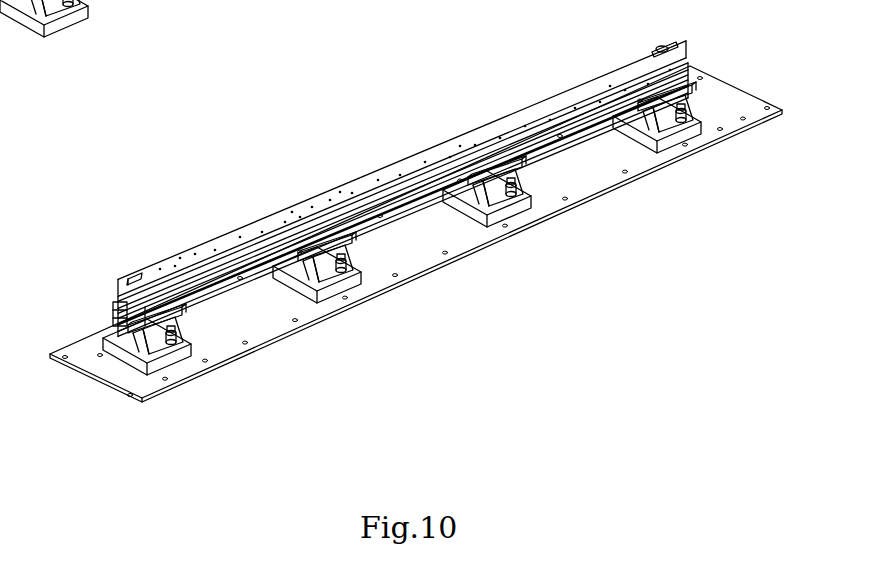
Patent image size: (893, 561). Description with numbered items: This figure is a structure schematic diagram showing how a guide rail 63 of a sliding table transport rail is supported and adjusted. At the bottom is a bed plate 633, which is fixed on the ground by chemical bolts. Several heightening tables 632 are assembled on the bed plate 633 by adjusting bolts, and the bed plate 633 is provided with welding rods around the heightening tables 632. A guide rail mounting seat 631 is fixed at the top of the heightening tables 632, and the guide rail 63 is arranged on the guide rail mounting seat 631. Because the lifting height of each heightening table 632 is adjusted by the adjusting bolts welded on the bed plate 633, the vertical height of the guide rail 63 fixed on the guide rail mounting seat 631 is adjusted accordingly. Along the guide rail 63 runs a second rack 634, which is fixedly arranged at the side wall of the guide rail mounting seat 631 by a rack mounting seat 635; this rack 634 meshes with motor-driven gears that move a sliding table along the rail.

The guide rail 63 is at (185, 264).
The guide rail mounting seat 631 is at (119, 307).
The heightening table 632 is at (179, 337).
The bed plate 633 is at (187, 375).
The second rack 634 is at (209, 297).
The rack mounting seat 635 is at (229, 287).